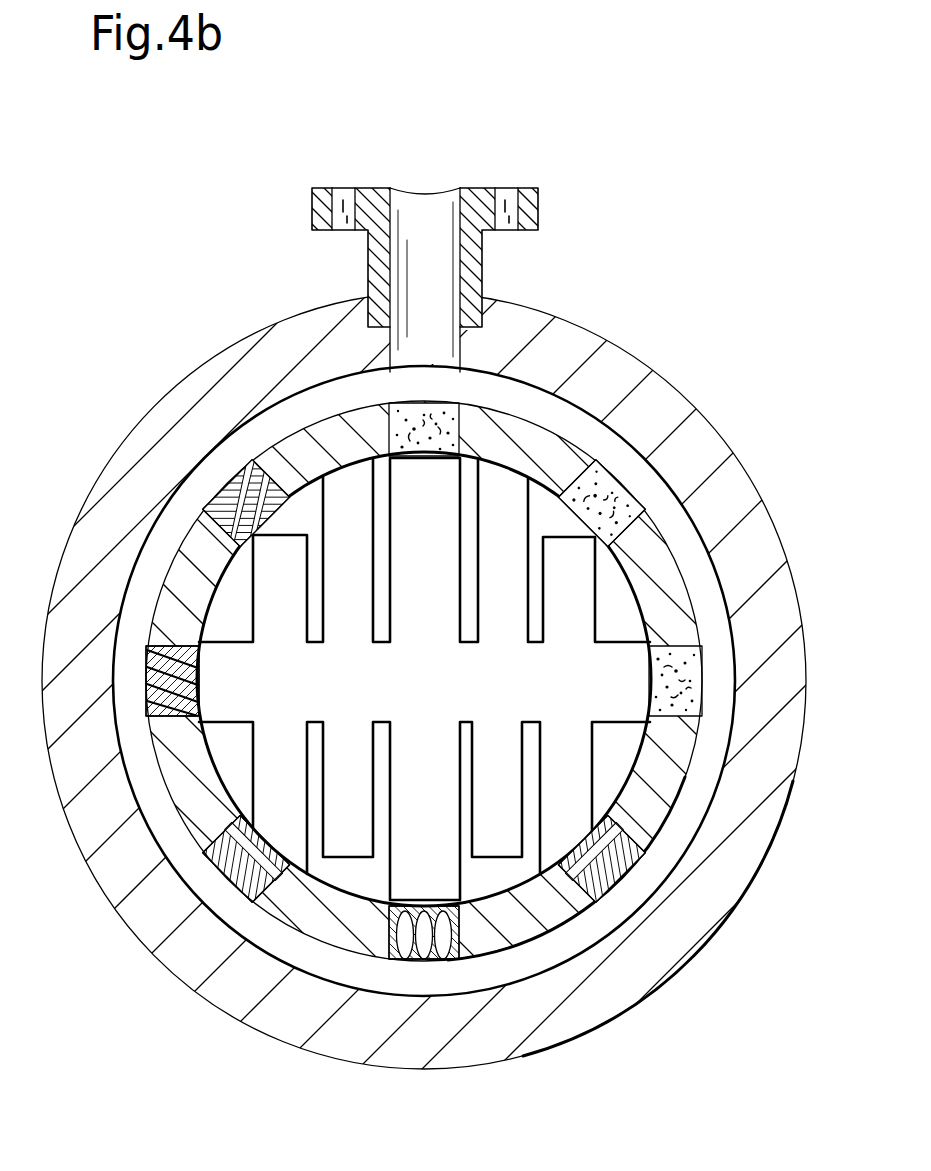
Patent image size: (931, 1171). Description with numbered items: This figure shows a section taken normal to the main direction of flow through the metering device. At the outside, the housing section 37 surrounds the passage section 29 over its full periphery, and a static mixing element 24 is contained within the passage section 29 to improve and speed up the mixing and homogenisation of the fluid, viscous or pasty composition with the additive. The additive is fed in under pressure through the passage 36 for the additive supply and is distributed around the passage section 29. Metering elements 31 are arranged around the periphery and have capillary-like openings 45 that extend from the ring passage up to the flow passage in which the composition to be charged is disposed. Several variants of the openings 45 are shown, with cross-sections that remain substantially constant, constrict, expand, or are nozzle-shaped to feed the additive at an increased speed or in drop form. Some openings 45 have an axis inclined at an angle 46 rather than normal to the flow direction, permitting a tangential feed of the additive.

The static mixing element 24 is at (350, 842).
The passage section 29 is at (520, 930).
The metering element 31 is at (592, 477).
The passage for the additive supply 36 is at (463, 262).
The housing section 37 is at (620, 360).
The capillary-like opening 45 is at (633, 870).
The angle 46 is at (233, 482).